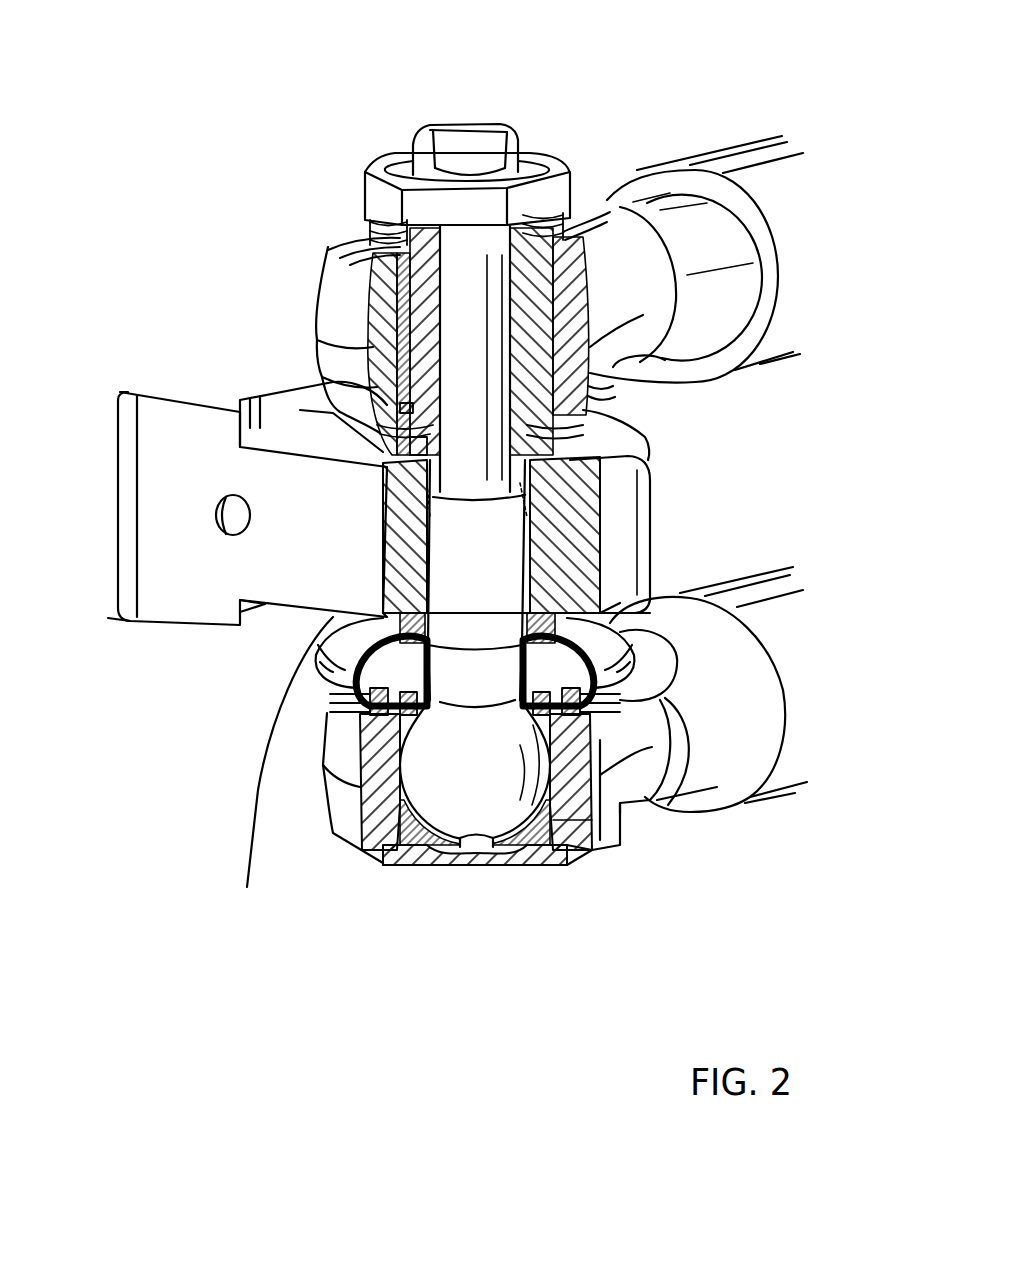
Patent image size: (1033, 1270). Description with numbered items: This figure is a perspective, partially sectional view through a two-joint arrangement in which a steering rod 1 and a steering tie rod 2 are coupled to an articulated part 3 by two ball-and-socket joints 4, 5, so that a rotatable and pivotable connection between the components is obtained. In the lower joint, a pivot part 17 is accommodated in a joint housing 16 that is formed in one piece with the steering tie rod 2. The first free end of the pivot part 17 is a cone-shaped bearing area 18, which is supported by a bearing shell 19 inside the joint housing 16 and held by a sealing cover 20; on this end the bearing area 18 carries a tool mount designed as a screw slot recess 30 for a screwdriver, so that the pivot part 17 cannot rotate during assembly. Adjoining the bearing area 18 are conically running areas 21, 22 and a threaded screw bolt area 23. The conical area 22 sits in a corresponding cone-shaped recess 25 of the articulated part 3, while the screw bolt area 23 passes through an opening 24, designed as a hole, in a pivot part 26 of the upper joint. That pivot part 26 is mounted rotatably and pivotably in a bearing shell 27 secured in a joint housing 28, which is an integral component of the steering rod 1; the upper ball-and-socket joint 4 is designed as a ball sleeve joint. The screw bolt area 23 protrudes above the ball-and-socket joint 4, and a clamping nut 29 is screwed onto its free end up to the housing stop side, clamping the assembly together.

The steering rod 1 is at (673, 217).
The steering tie rod 2 is at (737, 697).
The articulated part 3 is at (193, 590).
The ball-and-socket joint 4 is at (340, 317).
The ball-and-socket joint 5 is at (345, 793).
The joint housing 16 is at (352, 855).
The pivot part 17 is at (487, 775).
The bearing area 18 is at (590, 852).
The bearing shell 19 is at (385, 858).
The sealing cover 20 is at (548, 860).
The conical area 21 is at (455, 677).
The conical area 22 is at (475, 523).
The screw bolt area 23 is at (365, 213).
The opening 24 is at (497, 335).
The cone-shaped recess 25 is at (540, 567).
The pivot part 26 is at (328, 247).
The bearing shell 27 is at (323, 355).
The joint housing 28 is at (395, 385).
The clamping nut 29 is at (540, 197).
The screw slot recess 30 is at (470, 838).